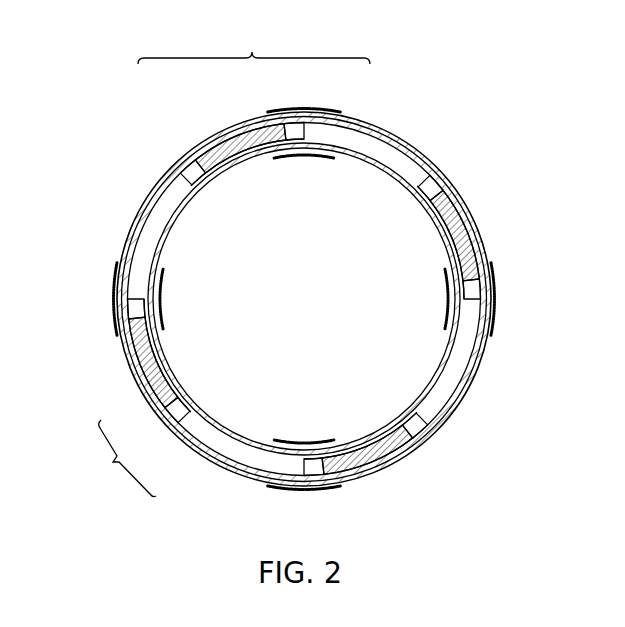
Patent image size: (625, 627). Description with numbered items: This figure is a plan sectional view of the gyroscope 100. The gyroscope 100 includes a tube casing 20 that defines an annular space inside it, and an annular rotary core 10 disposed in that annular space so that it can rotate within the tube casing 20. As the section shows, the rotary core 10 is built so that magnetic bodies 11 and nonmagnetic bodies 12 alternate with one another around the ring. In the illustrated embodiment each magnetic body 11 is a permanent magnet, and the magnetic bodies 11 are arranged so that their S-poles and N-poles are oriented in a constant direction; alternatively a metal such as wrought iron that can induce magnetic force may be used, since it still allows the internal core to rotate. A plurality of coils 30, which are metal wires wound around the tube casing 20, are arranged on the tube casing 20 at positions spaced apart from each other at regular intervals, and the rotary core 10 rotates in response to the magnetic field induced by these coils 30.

The gyroscope 100 is at (130, 198).
The rotary core 10 is at (228, 263).
The magnetic body 11 is at (316, 274).
The nonmagnetic body 12 is at (338, 136).
The tube casing 20 is at (415, 143).
The coil 30 is at (338, 153).